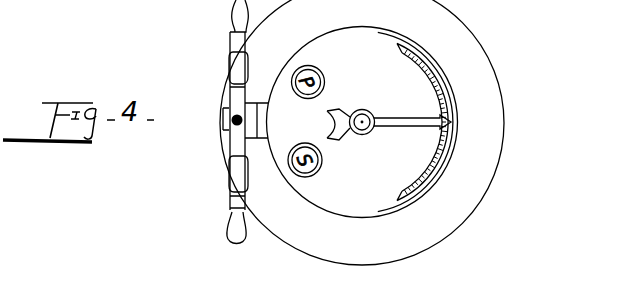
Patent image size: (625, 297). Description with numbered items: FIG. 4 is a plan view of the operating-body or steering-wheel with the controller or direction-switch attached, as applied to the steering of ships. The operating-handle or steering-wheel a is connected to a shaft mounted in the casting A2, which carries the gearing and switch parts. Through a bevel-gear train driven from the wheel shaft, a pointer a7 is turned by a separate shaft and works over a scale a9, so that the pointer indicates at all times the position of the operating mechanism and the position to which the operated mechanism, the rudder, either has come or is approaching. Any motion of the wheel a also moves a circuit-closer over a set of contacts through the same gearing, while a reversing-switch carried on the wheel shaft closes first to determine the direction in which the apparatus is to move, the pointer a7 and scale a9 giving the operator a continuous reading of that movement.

The operating rod / shaft a is at (238, 44).
The indicator needle a7 is at (400, 120).
The graduated scale a9 is at (443, 84).
The casing A2 is at (379, 132).